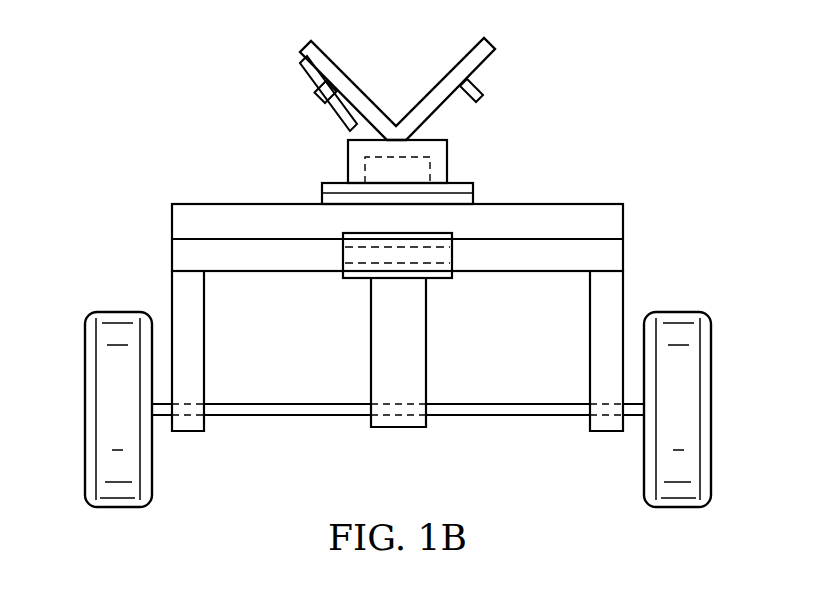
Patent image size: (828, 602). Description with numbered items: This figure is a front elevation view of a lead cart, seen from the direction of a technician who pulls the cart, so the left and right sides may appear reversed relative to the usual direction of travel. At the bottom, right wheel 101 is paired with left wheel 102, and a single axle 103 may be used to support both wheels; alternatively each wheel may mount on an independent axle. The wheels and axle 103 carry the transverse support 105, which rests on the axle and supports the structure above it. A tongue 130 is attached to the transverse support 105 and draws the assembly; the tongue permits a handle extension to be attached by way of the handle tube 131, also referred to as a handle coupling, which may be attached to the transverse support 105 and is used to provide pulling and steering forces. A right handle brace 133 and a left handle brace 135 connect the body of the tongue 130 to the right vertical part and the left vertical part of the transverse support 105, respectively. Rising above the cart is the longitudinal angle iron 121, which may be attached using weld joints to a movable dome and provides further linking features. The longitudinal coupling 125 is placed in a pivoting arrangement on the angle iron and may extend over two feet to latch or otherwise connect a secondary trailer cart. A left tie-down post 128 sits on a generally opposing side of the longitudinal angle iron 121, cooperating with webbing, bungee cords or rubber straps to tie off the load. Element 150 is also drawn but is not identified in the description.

The right wheel 101 is at (118, 508).
The left wheel 102 is at (675, 508).
The axle 103 is at (287, 416).
The transverse support 105 is at (546, 204).
The longitudinal angle iron 121 is at (358, 80).
The longitudinal coupling 125 is at (300, 65).
The left tie-down post 128 is at (483, 103).
The tongue 130 is at (397, 428).
The handle tube 131 is at (353, 280).
The right handle brace 133 is at (257, 274).
The left handle brace 135 is at (537, 272).
The side bar 150 is at (313, 105).